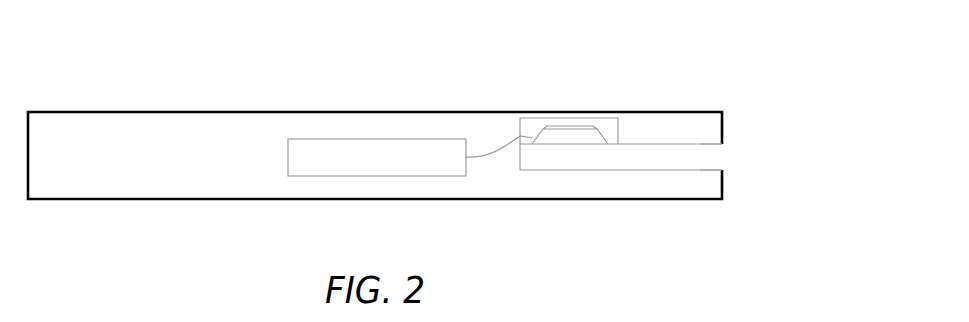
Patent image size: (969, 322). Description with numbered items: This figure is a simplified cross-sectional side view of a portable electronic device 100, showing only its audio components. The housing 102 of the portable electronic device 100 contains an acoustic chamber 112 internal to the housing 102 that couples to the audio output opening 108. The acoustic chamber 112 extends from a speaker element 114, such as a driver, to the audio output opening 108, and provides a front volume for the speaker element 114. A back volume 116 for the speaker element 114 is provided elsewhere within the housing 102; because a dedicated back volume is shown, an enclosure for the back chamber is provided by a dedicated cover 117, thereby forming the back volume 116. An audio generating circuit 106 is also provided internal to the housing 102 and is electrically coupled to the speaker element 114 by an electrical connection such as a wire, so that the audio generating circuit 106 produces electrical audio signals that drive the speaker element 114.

The portable electronic device 100 is at (252, 52).
The housing 102 is at (67, 112).
The audio generating circuit 106 is at (358, 139).
The audio output opening 108 is at (755, 152).
The acoustic chamber 112 is at (641, 158).
The speaker element 114 is at (553, 126).
The back volume 116 is at (610, 128).
The dedicated cover 117 is at (518, 129).